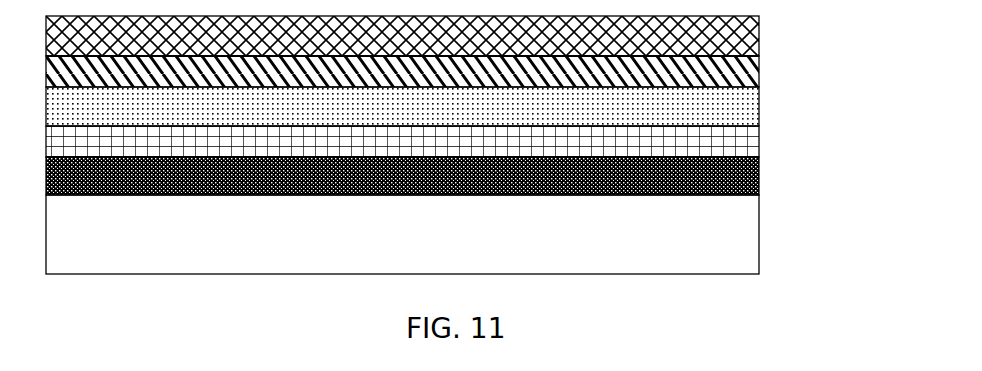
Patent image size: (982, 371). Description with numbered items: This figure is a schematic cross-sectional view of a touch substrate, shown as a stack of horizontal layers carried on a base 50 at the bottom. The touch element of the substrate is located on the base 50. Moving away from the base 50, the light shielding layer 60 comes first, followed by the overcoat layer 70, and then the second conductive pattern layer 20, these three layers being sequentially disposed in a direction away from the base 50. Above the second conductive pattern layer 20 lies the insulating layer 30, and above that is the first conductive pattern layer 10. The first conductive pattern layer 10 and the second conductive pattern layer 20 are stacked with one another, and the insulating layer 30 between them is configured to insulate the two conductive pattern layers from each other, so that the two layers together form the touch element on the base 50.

The first conductive pattern layer 10 is at (751, 29).
The insulating layer 30 is at (751, 65).
The second conductive pattern layer 20 is at (751, 100).
The overcoat layer 70 is at (751, 134).
The light shielding layer 60 is at (751, 171).
The base 50 is at (751, 228).